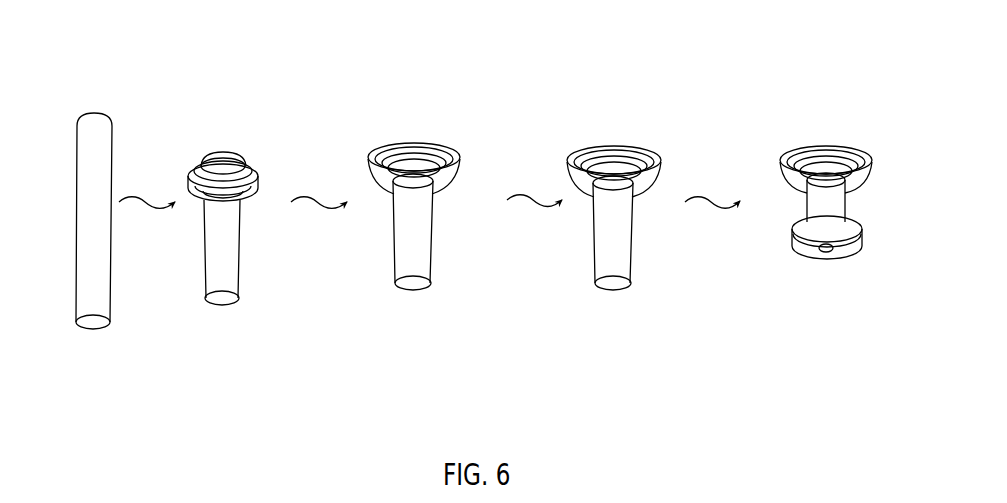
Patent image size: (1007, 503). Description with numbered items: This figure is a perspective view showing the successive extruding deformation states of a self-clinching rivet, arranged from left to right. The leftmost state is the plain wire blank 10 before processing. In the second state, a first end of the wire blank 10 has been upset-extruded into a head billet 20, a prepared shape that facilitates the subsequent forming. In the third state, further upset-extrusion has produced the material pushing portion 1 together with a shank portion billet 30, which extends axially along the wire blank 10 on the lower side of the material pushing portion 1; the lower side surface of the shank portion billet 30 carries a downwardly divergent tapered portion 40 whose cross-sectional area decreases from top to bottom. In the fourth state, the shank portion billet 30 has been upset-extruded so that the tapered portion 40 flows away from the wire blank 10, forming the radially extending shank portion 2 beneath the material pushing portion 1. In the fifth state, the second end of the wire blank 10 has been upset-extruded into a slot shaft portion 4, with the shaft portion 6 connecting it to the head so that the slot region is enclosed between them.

The material pushing portion 1 is at (630, 157).
The shank portion 2 is at (638, 168).
The slot shaft portion 4 is at (853, 238).
The shaft portion 6 is at (840, 203).
The wire blank 10 is at (62, 181).
The head billet 20 is at (228, 157).
The shank portion billet 30 is at (457, 180).
The tapered portion 40 is at (390, 195).